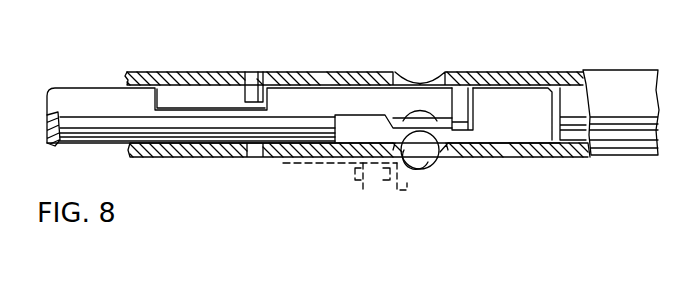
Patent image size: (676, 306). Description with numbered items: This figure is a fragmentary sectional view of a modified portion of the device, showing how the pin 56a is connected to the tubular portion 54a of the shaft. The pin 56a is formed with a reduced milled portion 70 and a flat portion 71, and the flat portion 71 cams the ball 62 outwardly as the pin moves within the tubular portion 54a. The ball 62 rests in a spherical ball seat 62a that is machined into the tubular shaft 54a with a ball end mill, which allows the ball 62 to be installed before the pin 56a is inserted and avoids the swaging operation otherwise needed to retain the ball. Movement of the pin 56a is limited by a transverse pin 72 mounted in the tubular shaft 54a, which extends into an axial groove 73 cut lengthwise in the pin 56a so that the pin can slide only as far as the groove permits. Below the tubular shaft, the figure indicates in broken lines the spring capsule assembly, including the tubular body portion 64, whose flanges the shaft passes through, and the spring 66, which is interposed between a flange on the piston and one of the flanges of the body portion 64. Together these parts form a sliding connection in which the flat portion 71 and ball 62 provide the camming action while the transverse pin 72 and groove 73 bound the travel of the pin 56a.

The tubular portion of the shaft 54a is at (580, 68).
The pin 56a is at (88, 102).
The axial groove 73 is at (177, 110).
The transverse pin 72 is at (257, 73).
The reduced milled portion 70 is at (360, 115).
The flat portion 71 is at (455, 125).
The ball 62 is at (429, 161).
The spherical ball seat 62a is at (451, 158).
The tubular body portion 64 is at (340, 164).
The spring 66 is at (365, 193).